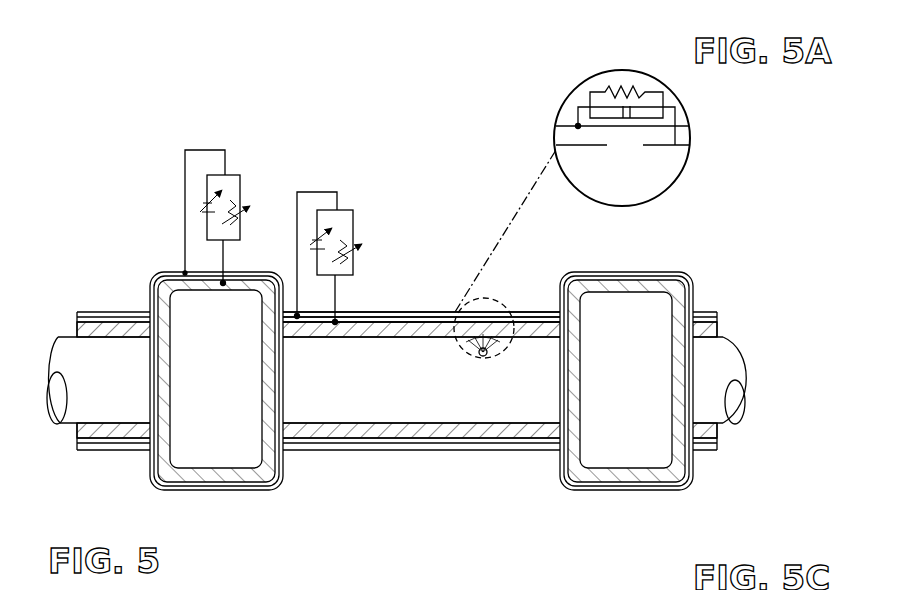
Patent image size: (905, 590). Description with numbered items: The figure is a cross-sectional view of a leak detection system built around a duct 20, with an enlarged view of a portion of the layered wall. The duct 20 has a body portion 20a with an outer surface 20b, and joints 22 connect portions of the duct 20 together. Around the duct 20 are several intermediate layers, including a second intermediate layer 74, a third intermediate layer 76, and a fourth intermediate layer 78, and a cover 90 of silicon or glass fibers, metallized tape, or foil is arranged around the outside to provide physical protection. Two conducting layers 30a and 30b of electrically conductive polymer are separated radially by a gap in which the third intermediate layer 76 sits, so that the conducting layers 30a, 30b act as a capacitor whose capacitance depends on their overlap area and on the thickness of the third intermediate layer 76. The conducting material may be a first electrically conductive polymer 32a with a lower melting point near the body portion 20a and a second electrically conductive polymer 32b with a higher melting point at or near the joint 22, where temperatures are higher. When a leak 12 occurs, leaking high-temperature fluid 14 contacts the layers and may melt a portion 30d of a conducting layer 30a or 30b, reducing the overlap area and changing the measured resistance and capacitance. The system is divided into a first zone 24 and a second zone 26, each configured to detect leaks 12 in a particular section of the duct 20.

In FIG. 5, the leak 12 is at (478, 360).
In FIG. 5, the leaking high-temperature fluid 14 is at (507, 348).
In FIG. 5, the duct 20 is at (712, 396).
In FIG. 5, the body portion 20a is at (362, 405).
In FIG. 5, the outer surface 20b is at (62, 427).
In FIG. 5, the joint 22 is at (185, 368).
In FIG. 5, the first zone 24 is at (197, 140).
In FIG. 5, the second zone 26 is at (320, 178).
In FIG. 5, the conducting layer 30a is at (517, 437).
In FIG. 5A, the conducting layer 30a is at (690, 128).
In FIG. 5, the conducting layer 30b is at (470, 437).
In FIG. 5A, the conducting layer 30b is at (683, 118).
In FIG. 5A, the portion 30d is at (648, 143).
In FIG. 5, the first electrically conductive polymer 32a is at (537, 310).
In FIG. 5, the second electrically conductive polymer 32b is at (173, 269).
In FIG. 5, the second intermediate layer 74 is at (717, 331).
In FIG. 5, the third intermediate layer 76 is at (716, 322).
In FIG. 5, the fourth intermediate layer 78 is at (718, 313).
In FIG. 5, the cover 90 is at (370, 312).